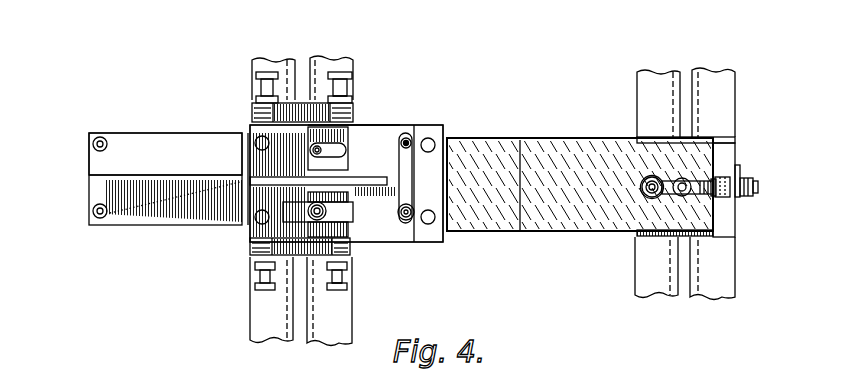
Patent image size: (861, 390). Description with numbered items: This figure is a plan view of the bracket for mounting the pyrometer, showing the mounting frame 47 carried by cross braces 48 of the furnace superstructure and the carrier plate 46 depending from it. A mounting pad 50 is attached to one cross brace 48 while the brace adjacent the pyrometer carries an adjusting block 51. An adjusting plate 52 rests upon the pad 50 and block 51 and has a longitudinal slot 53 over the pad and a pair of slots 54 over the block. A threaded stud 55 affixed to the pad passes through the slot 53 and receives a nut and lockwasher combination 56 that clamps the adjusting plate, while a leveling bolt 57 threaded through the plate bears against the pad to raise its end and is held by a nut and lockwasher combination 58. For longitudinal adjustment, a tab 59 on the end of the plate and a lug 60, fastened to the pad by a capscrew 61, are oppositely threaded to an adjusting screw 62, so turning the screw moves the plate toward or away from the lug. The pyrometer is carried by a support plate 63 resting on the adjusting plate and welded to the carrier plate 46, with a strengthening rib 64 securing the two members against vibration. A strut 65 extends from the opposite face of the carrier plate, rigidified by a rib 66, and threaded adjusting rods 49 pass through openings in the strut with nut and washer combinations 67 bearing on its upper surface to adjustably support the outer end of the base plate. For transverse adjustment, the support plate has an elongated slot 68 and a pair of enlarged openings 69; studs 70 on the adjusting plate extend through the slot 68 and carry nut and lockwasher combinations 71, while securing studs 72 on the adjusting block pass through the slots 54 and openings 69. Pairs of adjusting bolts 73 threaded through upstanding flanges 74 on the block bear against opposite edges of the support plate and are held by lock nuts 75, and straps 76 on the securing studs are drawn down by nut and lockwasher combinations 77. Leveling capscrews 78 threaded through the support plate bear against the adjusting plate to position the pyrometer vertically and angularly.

The carrier plate 46 is at (333, 183).
The mounting frame 47 is at (547, 127).
The cross braces 48 is at (345, 65).
The threaded adjusting rods 49 is at (90, 144).
The mounting pad 50 is at (727, 150).
The adjusting block 51 is at (257, 113).
The adjusting plate 52 is at (485, 147).
The slot 53 is at (668, 175).
The slots 54 is at (353, 125).
The threaded stud 55 is at (648, 182).
The nut and lockwasher combination 56 is at (657, 195).
The leveling bolt 57 is at (680, 180).
The nut and lockwasher combination 58 is at (677, 192).
The tab 59 is at (712, 195).
The lug 60 is at (740, 170).
The capscrew 61 is at (752, 180).
The adjusting screw 62 is at (758, 187).
The support plate 63 is at (370, 128).
The strengthening rib 64 is at (292, 180).
The strut 65 is at (167, 218).
The rib 66 is at (148, 177).
The nut and washer combinations 67 is at (90, 211).
The elongated slot 68 is at (407, 137).
The enlarged openings 69 is at (315, 128).
The studs 70 is at (410, 140).
The nut and lockwasher combinations 71 is at (413, 220).
The securing studs 72 is at (310, 148).
The adjusting bolts 73 is at (258, 75).
The upstanding flanges 74 is at (257, 103).
The lock nuts 75 is at (332, 100).
The straps 76 is at (343, 215).
The nut and lockwasher combinations 77 is at (330, 217).
The leveling capscrews 78 is at (253, 140).